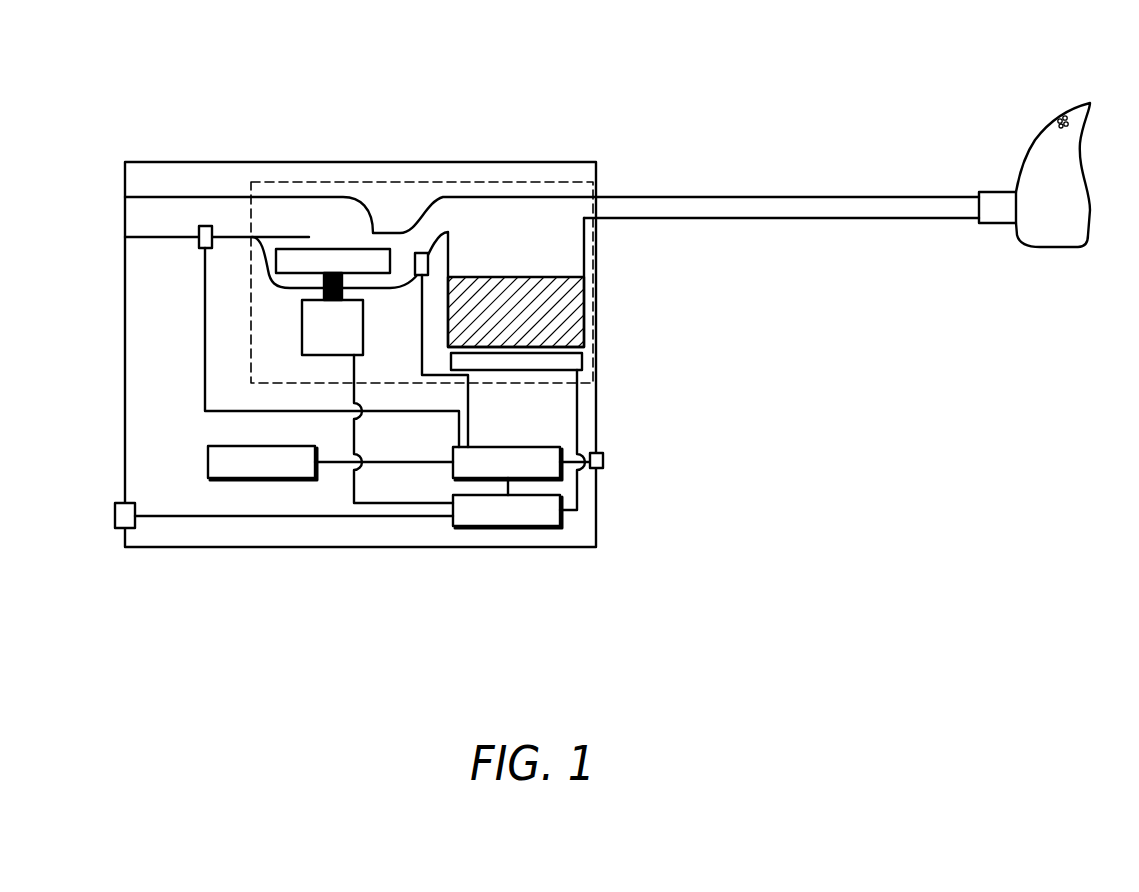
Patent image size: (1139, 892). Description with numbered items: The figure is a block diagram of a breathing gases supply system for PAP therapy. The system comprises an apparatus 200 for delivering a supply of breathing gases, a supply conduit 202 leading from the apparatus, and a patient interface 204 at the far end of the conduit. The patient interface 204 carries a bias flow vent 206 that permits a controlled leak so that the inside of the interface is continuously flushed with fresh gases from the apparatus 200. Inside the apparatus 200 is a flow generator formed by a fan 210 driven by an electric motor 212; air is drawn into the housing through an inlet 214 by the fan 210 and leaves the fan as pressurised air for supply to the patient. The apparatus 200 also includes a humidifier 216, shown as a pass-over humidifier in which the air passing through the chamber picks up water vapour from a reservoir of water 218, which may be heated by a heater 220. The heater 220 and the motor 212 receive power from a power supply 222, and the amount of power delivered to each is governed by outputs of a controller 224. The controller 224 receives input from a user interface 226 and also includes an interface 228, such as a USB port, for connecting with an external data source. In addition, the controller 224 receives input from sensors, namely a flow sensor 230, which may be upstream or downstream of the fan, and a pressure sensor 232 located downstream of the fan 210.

The apparatus 200 is at (383, 182).
The supply conduit 202 is at (738, 197).
The patient interface 204 is at (1090, 103).
The bias flow vent 206 is at (1058, 120).
The fan 210 is at (337, 255).
The electric motor 212 is at (311, 328).
The inlet 214 is at (125, 223).
The humidifier 216 is at (543, 207).
The reservoir of water 218 is at (574, 305).
The heater 220 is at (582, 365).
The power supply 222 is at (510, 527).
The controller 224 is at (512, 447).
The user interface 226 is at (285, 447).
The interface 228 is at (603, 462).
The flow sensor 230 is at (205, 358).
The pressure sensor 232 is at (424, 286).